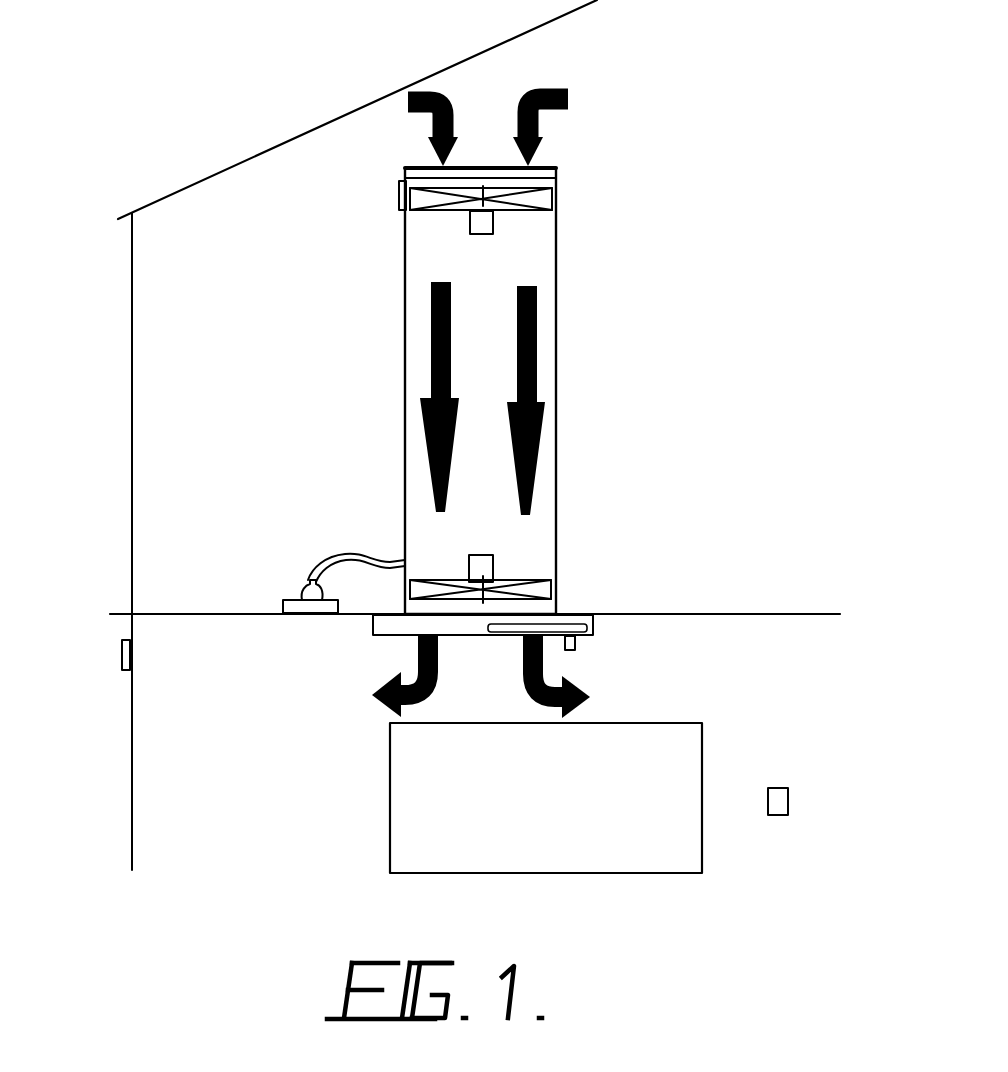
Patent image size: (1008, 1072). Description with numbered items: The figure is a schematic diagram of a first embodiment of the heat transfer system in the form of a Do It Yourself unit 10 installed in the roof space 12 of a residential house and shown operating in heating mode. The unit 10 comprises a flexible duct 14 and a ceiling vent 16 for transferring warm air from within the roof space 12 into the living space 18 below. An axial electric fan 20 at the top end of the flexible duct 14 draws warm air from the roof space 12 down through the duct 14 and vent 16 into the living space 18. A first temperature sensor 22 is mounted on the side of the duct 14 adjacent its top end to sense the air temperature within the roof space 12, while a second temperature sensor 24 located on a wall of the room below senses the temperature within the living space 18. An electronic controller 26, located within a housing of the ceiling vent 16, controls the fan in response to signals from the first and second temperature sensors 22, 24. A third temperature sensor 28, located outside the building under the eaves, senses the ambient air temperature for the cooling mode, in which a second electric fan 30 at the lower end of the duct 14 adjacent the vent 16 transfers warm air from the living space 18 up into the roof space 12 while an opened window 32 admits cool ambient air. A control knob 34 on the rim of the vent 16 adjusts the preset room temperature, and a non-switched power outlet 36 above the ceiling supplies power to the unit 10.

The Do It Yourself (DIY) unit 10 is at (326, 352).
The roof space 12 is at (703, 309).
The flexible duct 14 is at (556, 440).
The ceiling vent 16 is at (475, 637).
The living space 18 is at (233, 802).
The electric fan 20 is at (493, 218).
The first temperature sensor 22 is at (399, 189).
The second temperature sensor 24 is at (777, 800).
The electronic controller 26 is at (568, 625).
The third temperature sensor 28 is at (122, 652).
The second electric fan 30 is at (493, 565).
The window 32 is at (390, 780).
The control knob 34 is at (570, 650).
The non-switched power outlet 36 is at (282, 600).